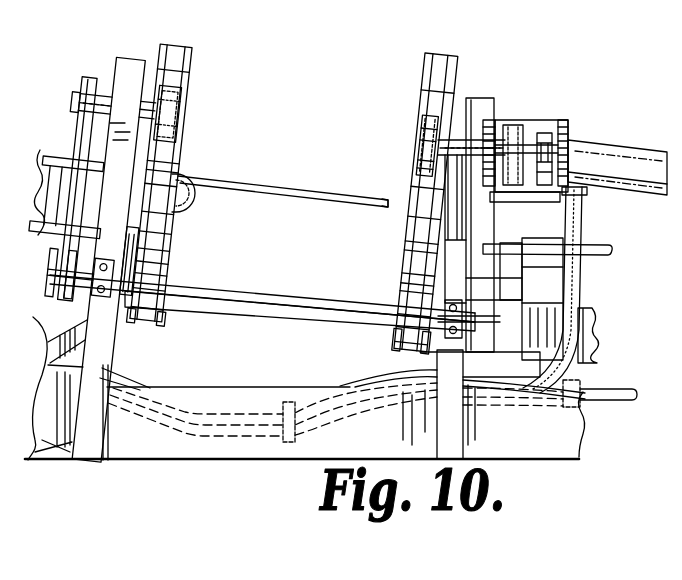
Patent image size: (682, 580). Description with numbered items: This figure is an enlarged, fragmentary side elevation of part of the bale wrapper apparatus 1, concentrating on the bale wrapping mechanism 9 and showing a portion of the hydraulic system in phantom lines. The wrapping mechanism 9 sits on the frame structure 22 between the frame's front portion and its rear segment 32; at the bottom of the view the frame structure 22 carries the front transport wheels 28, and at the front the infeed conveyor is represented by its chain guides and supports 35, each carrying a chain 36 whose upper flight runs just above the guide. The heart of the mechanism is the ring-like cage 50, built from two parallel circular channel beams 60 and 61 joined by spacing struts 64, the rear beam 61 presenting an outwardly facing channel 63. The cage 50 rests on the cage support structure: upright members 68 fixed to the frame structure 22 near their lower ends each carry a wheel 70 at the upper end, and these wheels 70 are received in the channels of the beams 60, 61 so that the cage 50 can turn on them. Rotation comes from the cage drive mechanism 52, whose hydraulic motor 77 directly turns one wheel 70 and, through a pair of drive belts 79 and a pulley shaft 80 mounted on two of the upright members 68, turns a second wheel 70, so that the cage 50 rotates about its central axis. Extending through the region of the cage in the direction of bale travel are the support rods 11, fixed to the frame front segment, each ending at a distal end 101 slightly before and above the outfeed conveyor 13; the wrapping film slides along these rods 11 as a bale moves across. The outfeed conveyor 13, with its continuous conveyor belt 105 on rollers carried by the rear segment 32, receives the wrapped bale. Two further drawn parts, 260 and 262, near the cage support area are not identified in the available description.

The bale wrapper apparatus 1 is at (630, 329).
The bale wrapping mechanism 9 is at (456, 62).
The support rods 11 is at (305, 192).
The outfeed conveyor 13 is at (583, 308).
The frame structure 22 is at (238, 459).
The front transport wheels 28 is at (28, 462).
The rear segment 32 is at (597, 354).
The chain guides and supports 35 is at (60, 232).
The chain 36 is at (72, 160).
The cage 50 is at (192, 57).
The cage drive mechanism 52 is at (560, 100).
The circular channel beam 60 is at (470, 226).
The circular channel beam 61 is at (405, 283).
The outwardly facing channel 63 is at (403, 250).
The spacing struts 64 is at (318, 325).
The upright members 68 is at (138, 58).
The wheel 70 is at (167, 112).
The hydraulic motor 77 is at (620, 145).
The drive belts 79 is at (48, 243).
The pulley shaft 80 is at (260, 293).
The distal end 101 is at (395, 203).
The continuous conveyor belt 105 is at (600, 252).
The lower bar 260 is at (162, 262).
The upper bar 262 is at (161, 233).